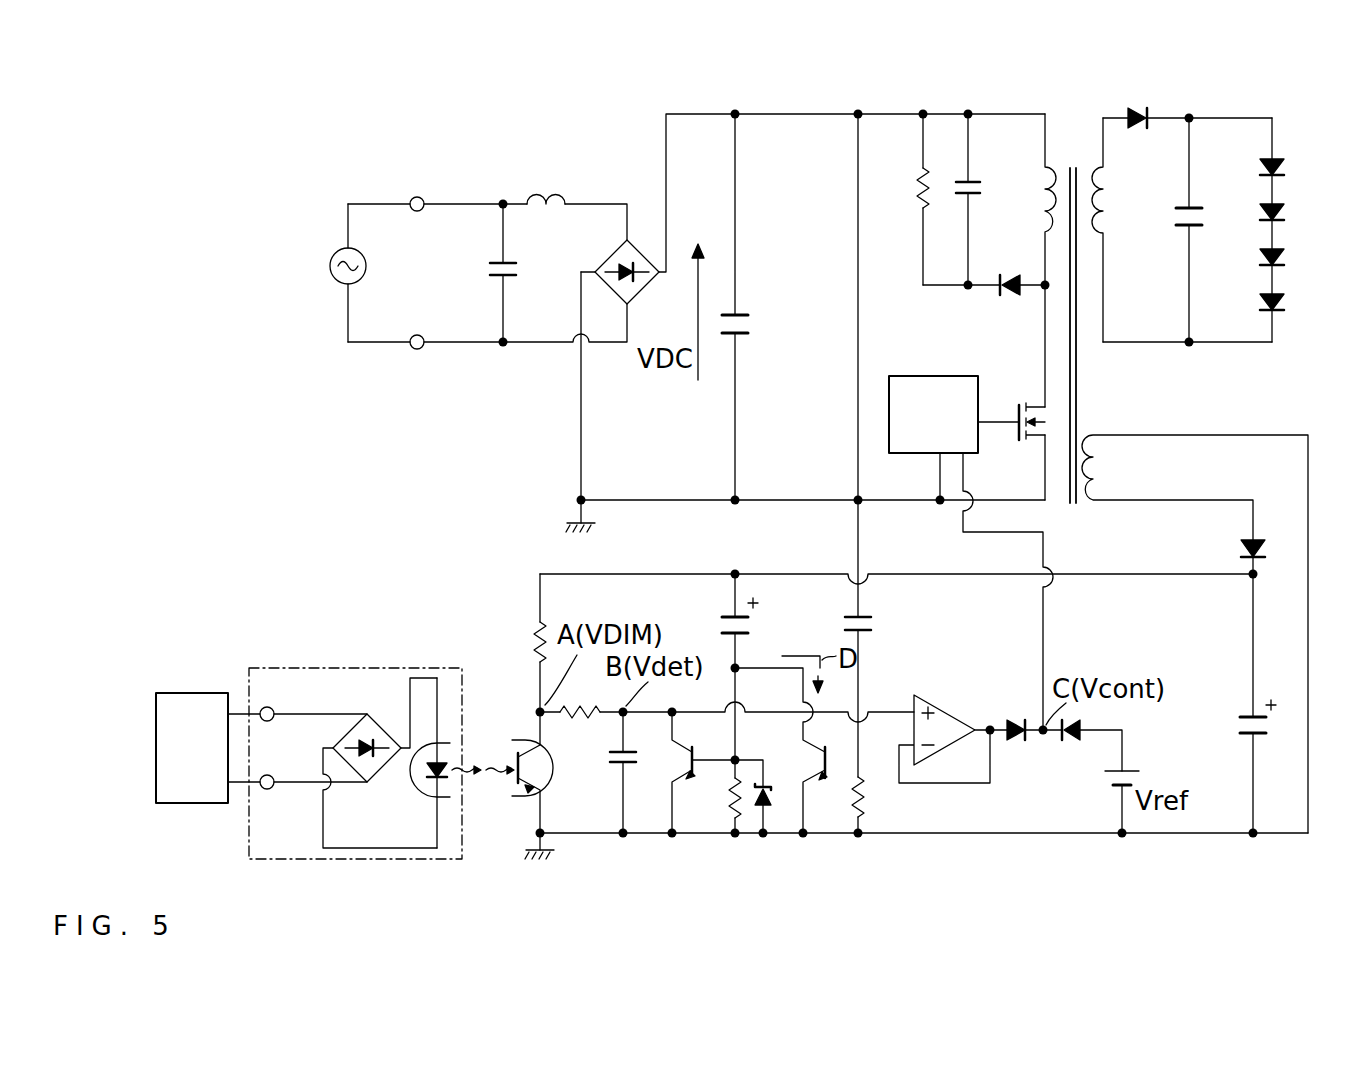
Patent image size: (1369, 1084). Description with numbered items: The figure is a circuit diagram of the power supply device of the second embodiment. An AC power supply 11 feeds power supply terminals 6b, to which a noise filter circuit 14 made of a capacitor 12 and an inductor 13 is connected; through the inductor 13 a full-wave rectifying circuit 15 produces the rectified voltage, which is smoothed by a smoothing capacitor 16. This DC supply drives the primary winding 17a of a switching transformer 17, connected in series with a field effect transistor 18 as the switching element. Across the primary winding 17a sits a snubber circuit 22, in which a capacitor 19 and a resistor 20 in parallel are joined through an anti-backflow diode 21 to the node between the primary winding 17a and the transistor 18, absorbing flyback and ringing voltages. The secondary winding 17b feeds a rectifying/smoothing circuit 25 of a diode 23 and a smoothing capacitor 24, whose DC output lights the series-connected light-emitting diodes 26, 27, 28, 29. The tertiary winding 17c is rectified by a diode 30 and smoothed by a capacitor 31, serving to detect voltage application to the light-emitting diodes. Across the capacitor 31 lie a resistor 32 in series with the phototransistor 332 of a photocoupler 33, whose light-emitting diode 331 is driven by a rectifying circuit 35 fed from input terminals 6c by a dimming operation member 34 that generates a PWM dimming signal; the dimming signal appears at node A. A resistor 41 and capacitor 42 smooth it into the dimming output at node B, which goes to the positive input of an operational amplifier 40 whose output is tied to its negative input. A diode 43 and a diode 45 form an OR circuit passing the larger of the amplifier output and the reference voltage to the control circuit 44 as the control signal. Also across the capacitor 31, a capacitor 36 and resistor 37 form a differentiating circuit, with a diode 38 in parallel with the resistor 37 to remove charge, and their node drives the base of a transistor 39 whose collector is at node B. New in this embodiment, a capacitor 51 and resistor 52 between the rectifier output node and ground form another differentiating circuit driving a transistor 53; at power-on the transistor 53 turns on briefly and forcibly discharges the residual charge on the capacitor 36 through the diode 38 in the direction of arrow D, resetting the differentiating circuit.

The power supply terminal 6b is at (417, 197).
The input terminal 6c is at (268, 706).
The AC power supply 11 is at (366, 266).
The capacitor 12 is at (488, 270).
The inductor 13 is at (545, 196).
The noise filter circuit 14 is at (562, 259).
The full-wave rectifying circuit 15 is at (646, 292).
The smoothing capacitor 16 is at (749, 330).
The switching transformer 17 is at (1090, 123).
The primary winding 17a is at (1040, 212).
The secondary winding 17b is at (1110, 196).
The tertiary winding 17c is at (1105, 468).
The field effect transistor 18 is at (1030, 442).
The capacitor 19 is at (976, 185).
The resistor 20 is at (915, 200).
The anti-backflow diode 21 is at (1012, 298).
The snubber circuit 22 is at (960, 243).
The diode 23 is at (1140, 106).
The smoothing capacitor 24 is at (1204, 220).
The rectifying/smoothing circuit 25 is at (1165, 181).
The light-emitting diode 26 is at (1286, 167).
The light-emitting diode 27 is at (1286, 212).
The light-emitting diode 28 is at (1286, 257).
The light-emitting diode 29 is at (1286, 302).
The diode 30 is at (1262, 538).
The capacitor 31 is at (1264, 698).
The resistor 32 is at (532, 624).
The photocoupler 33 is at (448, 793).
The light-emitting diode 331 is at (417, 792).
The phototransistor 332 is at (520, 802).
The dimming operation member 34 is at (190, 692).
The rectifying circuit 35 is at (386, 730).
The capacitor 36 is at (755, 626).
The resistor 37 is at (718, 796).
The diode 38 is at (772, 806).
The transistor 39 is at (670, 764).
The operational amplifier 40 is at (952, 702).
The resistor 41 is at (588, 723).
The capacitor 42 is at (608, 760).
The diode 43 is at (1017, 744).
The control circuit 44 is at (912, 455).
The diode 45 is at (1070, 745).
The capacitor 51 is at (874, 624).
The resistor 52 is at (866, 800).
The transistor 53 is at (802, 757).